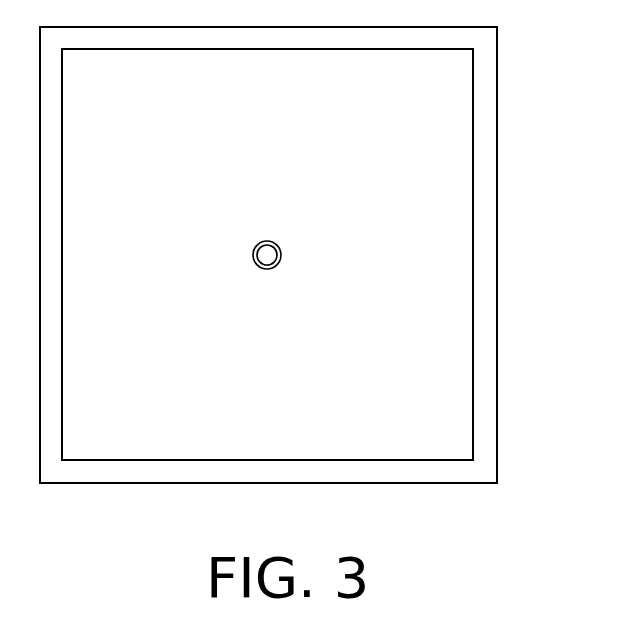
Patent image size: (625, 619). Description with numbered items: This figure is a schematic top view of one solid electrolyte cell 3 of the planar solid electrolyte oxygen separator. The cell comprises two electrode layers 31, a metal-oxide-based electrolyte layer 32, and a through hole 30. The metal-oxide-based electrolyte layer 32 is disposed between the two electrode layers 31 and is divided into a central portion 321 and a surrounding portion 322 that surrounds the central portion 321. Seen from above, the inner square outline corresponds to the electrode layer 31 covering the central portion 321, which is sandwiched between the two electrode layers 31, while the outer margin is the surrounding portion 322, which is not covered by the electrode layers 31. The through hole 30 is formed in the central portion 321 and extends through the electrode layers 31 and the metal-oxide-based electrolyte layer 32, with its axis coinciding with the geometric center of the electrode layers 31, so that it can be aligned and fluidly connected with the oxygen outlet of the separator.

The solid electrolyte cell 3 is at (519, 69).
The through hole 30 is at (281, 250).
The electrode layer 31 is at (447, 131).
The metal-oxide-based electrolyte layer 32 is at (497, 223).
The central portion 321 is at (433, 293).
The surrounding portion 322 is at (488, 186).